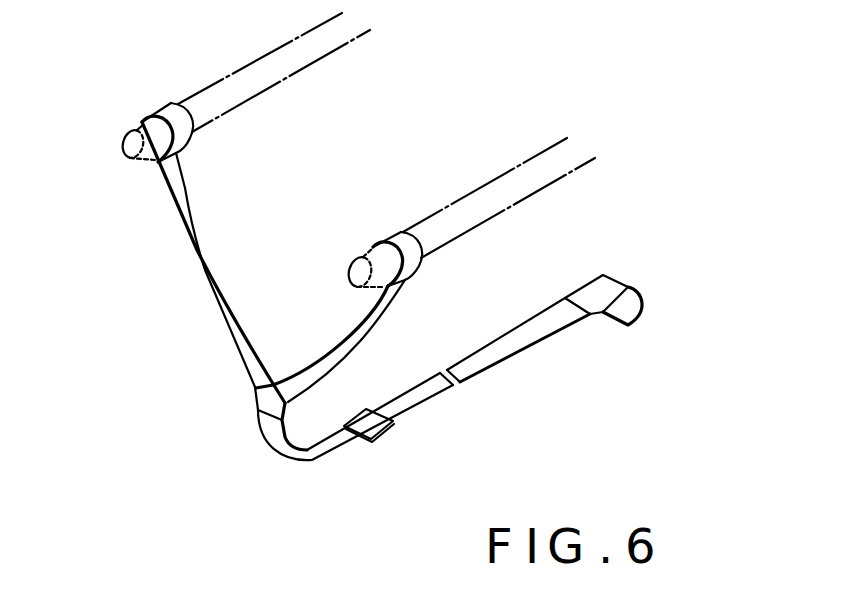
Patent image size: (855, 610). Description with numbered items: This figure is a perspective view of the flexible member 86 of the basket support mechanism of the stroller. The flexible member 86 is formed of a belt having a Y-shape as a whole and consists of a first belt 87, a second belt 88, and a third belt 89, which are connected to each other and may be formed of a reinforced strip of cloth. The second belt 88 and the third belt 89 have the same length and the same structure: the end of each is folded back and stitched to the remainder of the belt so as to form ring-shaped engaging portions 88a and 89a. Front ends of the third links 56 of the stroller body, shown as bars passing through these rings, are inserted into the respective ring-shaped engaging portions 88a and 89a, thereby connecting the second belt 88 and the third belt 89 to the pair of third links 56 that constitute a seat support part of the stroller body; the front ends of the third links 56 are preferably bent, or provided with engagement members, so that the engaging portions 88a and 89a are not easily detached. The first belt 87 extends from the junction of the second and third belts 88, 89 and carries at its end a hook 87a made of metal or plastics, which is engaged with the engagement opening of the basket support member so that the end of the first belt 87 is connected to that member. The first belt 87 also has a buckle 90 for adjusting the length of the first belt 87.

The third links 56 is at (123, 143).
The flexible member 86 is at (207, 438).
The first belt 87 is at (527, 347).
The hook 87a is at (615, 285).
The second belt 88 is at (210, 300).
The ring-shaped engaging portion 88a is at (170, 110).
The third belt 89 is at (338, 347).
The ring-shaped engaging portion 89a is at (392, 242).
The buckle 90 is at (377, 440).